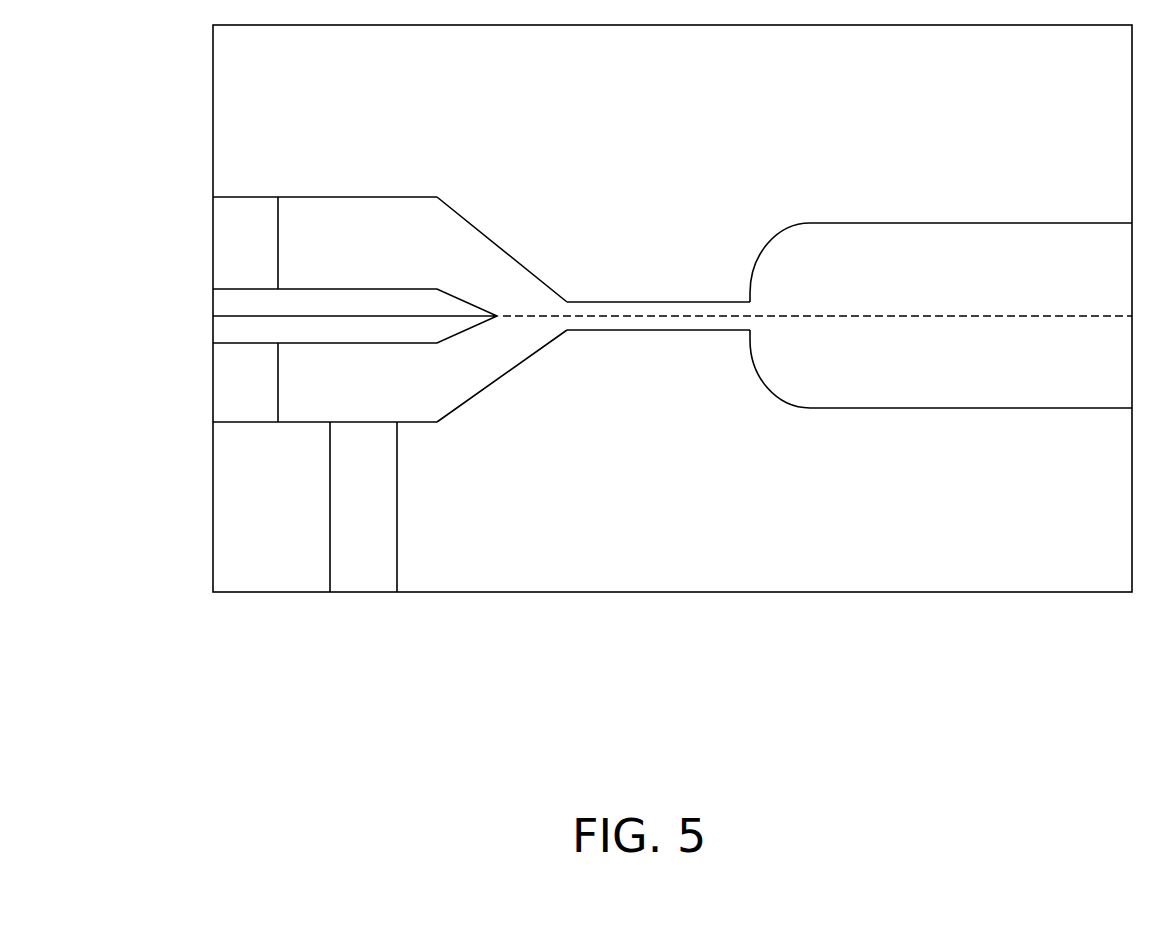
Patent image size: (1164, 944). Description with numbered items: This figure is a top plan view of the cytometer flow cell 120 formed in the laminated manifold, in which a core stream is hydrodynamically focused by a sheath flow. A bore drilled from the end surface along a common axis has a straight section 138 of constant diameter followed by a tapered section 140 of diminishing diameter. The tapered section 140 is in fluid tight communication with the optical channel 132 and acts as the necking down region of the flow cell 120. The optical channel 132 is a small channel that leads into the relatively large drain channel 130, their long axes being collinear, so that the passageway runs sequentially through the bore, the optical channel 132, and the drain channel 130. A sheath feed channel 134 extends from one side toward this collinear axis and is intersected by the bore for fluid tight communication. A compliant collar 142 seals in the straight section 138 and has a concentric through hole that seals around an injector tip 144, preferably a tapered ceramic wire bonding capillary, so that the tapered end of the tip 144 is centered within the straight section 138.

The cytometer flow cell 120 is at (667, 390).
The drain channel 130 is at (948, 235).
The optical channel 132 is at (660, 302).
The sheath feed channel 134 is at (357, 565).
The straight section 138 is at (358, 197).
The tapered section 140 is at (515, 260).
The compliant collar 142 is at (278, 250).
The injector tip 144 is at (240, 303).